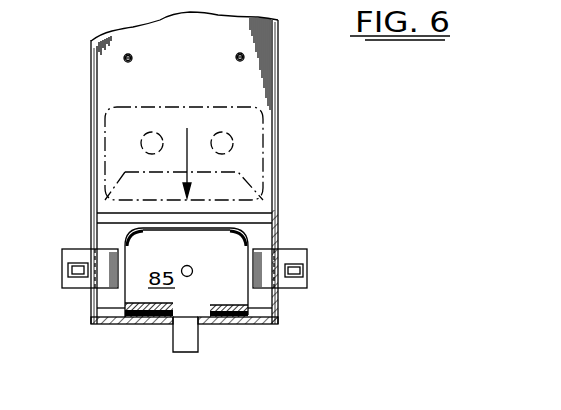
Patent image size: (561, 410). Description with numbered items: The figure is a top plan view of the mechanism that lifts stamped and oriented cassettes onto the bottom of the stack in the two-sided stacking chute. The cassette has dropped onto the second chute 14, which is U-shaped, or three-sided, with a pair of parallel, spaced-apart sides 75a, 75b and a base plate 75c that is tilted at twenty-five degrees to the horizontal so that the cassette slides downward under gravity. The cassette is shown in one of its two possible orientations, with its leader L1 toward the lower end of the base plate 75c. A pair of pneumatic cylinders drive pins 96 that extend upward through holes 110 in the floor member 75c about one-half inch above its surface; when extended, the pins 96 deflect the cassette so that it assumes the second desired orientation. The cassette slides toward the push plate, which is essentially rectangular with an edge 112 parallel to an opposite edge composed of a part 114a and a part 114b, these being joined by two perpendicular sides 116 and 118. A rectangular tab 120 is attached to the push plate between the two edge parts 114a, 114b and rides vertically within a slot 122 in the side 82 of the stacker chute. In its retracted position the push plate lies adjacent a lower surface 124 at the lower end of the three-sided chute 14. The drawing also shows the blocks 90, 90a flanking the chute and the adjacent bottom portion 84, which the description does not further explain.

The second chute 14 is at (174, 168).
The side 75a is at (277, 103).
The side 75b is at (90, 102).
The base plate 75c is at (184, 47).
The pins 96 is at (237, 54).
The holes 110 is at (127, 62).
The leader L1 is at (278, 199).
The edge 112 is at (158, 226).
The lower surface 124 is at (108, 235).
The right latch block 90 is at (307, 262).
The left latch block 90a is at (63, 267).
The side 116 is at (124, 306).
The side 118 is at (247, 308).
The side 82 is at (104, 326).
The bottom plate right portion 84 is at (169, 326).
The part 114a is at (137, 326).
The part 114b is at (225, 326).
The rectangular tab 120 is at (188, 342).
The slot 122 is at (177, 322).